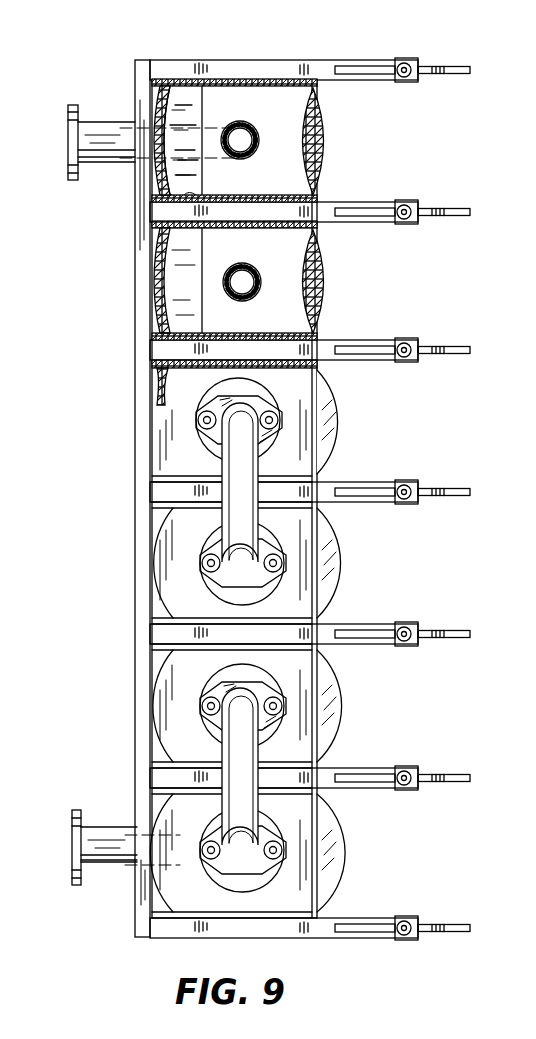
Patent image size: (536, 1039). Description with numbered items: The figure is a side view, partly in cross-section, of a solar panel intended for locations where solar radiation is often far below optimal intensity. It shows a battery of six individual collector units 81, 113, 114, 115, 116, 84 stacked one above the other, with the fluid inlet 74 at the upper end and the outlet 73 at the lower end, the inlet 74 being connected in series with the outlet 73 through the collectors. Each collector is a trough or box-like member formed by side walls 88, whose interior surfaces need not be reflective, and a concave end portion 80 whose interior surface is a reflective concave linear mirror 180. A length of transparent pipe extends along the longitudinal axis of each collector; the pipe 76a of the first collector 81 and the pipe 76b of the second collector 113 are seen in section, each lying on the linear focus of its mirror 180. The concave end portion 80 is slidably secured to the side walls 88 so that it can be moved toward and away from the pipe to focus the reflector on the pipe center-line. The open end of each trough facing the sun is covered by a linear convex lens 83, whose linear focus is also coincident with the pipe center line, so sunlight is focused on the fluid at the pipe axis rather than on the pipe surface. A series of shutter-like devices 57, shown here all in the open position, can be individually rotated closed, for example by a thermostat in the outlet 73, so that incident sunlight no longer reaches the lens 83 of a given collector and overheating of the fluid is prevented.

The shutter-like device 57 is at (452, 58).
The concave end portion 80 is at (158, 101).
The inlet 74 is at (98, 120).
The reflective concave linear mirror 180 is at (168, 106).
The side walls 88 is at (249, 84).
The linear convex lens 83 is at (330, 113).
The transparent pipe 76a is at (256, 150).
The transparent pipe 76b is at (240, 297).
The collector unit 81 is at (389, 183).
The collector unit 113 is at (382, 299).
The collector unit 114 is at (447, 474).
The collector unit 115 is at (454, 594).
The collector unit 116 is at (449, 723).
The collector unit 84 is at (419, 869).
The outlet 73 is at (109, 864).